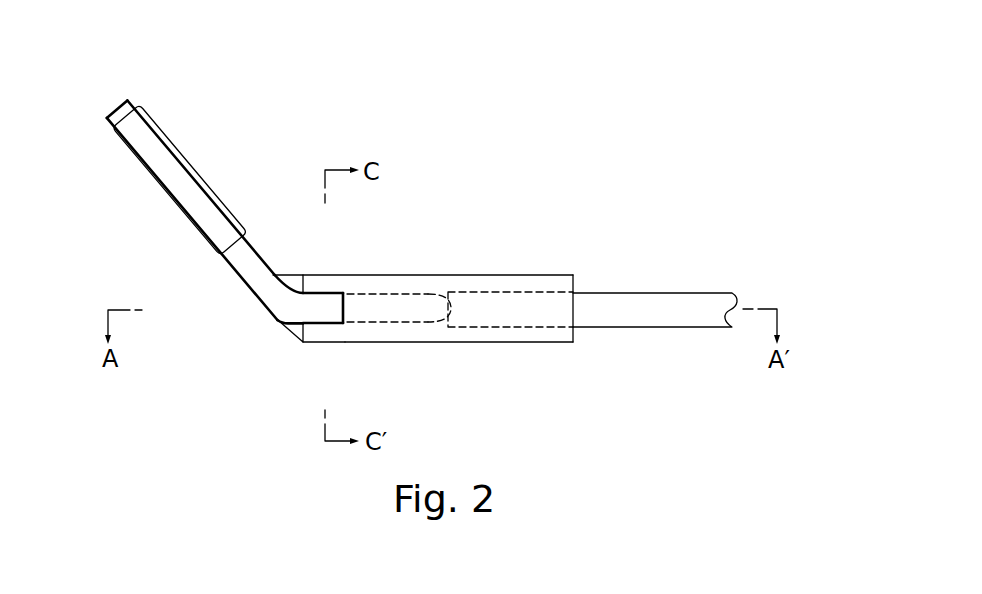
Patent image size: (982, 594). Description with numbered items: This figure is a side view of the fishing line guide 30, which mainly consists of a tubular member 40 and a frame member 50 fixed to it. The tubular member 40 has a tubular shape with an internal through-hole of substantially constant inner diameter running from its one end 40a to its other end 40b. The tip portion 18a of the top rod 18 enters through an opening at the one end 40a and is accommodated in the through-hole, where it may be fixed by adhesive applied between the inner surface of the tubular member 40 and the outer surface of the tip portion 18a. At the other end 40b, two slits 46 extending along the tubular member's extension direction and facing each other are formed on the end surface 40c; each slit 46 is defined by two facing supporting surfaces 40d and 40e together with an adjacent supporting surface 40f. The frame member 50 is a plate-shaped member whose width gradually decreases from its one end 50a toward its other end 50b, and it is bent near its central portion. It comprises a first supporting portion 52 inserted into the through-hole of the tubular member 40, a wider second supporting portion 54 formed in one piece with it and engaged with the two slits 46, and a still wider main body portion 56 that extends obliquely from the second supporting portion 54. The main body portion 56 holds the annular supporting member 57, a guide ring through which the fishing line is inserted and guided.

The fishing line guide 30 is at (618, 146).
The tubular member 40 is at (486, 270).
The one end of the tubular member 40a is at (552, 275).
The other end of the tubular member 40b is at (310, 275).
The end surface 40c is at (293, 333).
The supporting surface 40d is at (332, 283).
The supporting surface 40e is at (301, 336).
The supporting surface 40f is at (345, 311).
The slit 46 is at (331, 326).
The frame member 50 is at (252, 260).
The one end of the frame member 50a is at (113, 109).
The other end of the frame member 50b is at (432, 292).
The first supporting portion 52 is at (399, 314).
The second supporting portion 54 is at (322, 310).
The main body portion 56 is at (237, 253).
The annular supporting member 57 is at (169, 129).
The top rod 18 is at (645, 318).
The tip portion of the top rod 18a is at (518, 314).